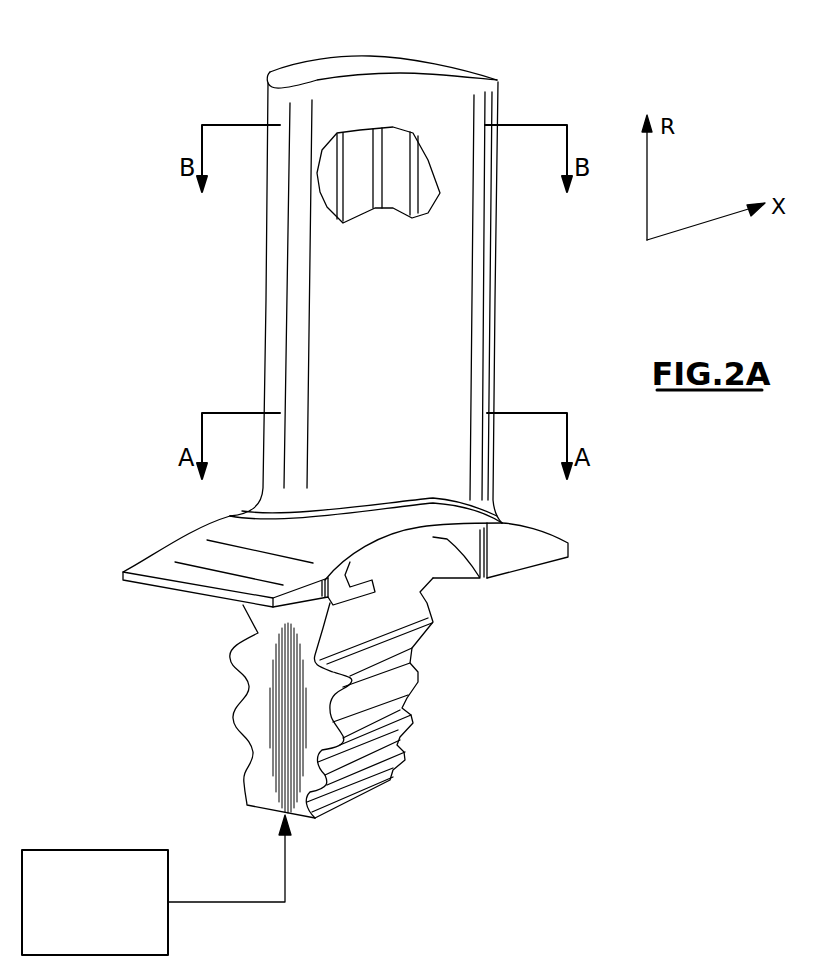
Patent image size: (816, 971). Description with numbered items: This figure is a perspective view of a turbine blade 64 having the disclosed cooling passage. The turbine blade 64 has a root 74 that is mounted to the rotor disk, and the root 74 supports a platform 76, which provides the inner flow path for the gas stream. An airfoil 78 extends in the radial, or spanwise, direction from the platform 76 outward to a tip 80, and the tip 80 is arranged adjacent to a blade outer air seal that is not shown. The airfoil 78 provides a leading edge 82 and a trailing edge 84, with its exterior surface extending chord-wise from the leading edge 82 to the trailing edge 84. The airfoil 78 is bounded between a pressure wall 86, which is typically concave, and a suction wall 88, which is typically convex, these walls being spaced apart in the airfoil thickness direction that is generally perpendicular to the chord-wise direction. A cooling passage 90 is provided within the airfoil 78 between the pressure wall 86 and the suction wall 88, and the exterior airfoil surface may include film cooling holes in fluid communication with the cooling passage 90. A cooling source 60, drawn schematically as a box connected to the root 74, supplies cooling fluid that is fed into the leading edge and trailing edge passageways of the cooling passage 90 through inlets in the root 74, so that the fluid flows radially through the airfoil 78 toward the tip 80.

The cooling source 60 is at (82, 850).
The turbine blade 64 is at (233, 249).
The root 74 is at (272, 716).
The platform 76 is at (387, 522).
The airfoil 78 is at (430, 393).
The tip 80 is at (290, 62).
The leading edge 82 is at (267, 245).
The trailing edge 84 is at (495, 234).
The pressure wall 86 is at (366, 297).
The suction wall 88 is at (412, 56).
The cooling passage 90 is at (420, 178).